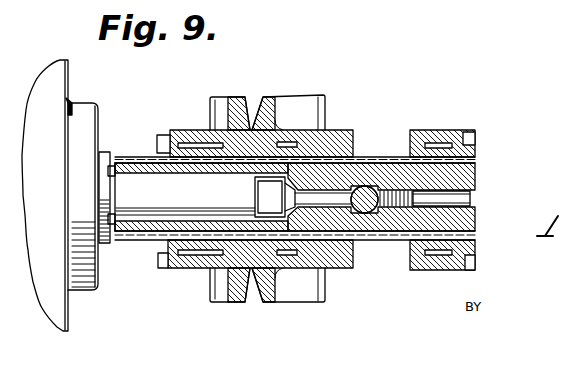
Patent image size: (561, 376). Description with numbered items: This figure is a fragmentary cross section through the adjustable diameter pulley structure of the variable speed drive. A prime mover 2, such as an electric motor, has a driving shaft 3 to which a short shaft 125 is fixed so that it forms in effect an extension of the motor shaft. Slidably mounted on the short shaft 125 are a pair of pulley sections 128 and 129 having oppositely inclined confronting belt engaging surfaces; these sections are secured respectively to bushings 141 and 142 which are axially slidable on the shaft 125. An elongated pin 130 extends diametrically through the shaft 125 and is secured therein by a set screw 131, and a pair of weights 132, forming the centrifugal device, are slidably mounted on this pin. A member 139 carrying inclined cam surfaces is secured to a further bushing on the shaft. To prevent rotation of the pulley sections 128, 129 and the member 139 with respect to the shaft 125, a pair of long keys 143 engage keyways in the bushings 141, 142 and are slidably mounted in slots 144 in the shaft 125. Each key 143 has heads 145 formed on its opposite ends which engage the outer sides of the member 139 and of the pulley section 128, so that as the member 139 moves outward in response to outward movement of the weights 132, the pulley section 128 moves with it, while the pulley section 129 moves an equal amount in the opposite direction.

The prime mover 2 is at (68, 98).
The driving shaft 3 is at (137, 192).
The short shaft 125 is at (468, 178).
The pulley section 128 is at (236, 100).
The pulley section 129 is at (274, 100).
The elongated pin 130 is at (372, 214).
The set screw 131 is at (414, 200).
The weights 132 is at (542, 13).
The member 139 is at (447, 134).
The bushing 141 is at (203, 157).
The bushing 142 is at (320, 266).
The long keys 143 is at (380, 158).
The slots 144 is at (137, 157).
The heads 145 is at (162, 140).